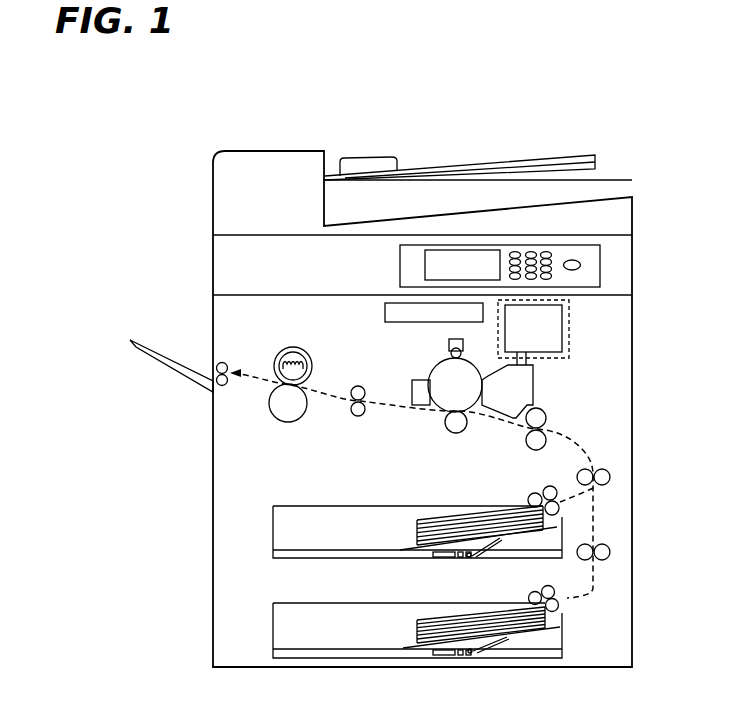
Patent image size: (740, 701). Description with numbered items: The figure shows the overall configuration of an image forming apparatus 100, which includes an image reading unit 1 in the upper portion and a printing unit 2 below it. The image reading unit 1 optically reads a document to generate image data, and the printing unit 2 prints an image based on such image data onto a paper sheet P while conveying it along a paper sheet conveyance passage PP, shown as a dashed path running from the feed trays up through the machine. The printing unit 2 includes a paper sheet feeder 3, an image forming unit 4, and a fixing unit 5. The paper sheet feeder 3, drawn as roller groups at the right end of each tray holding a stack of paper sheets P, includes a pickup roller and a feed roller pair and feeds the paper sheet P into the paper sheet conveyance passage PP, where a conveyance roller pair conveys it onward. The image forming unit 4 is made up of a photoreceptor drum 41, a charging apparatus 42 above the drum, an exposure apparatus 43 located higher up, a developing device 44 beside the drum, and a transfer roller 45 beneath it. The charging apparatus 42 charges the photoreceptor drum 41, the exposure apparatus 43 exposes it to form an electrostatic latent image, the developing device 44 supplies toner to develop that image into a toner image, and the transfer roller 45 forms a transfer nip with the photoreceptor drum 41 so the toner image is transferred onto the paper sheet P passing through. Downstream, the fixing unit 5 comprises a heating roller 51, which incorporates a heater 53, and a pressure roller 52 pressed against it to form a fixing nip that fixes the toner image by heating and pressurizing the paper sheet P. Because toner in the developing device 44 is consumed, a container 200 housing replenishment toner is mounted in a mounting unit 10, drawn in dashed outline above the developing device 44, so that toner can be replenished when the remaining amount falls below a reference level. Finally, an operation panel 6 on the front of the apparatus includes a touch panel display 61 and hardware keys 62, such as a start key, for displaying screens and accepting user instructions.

The image forming apparatus 100 is at (214, 145).
The image reading unit 1 is at (456, 259).
The printing unit 2 is at (642, 365).
The operation panel 6 is at (488, 249).
The touch panel display 61 is at (478, 256).
The hardware key 62 is at (573, 258).
The exposure apparatus 43 is at (385, 311).
The mounting unit 10 is at (562, 332).
The container 200 is at (558, 320).
The image forming unit 4 is at (483, 398).
The photoreceptor drum 41 is at (440, 368).
The charging apparatus 42 is at (449, 343).
The developing device 44 is at (531, 396).
The transfer roller 45 is at (452, 434).
The fixing unit 5 is at (274, 383).
The heating roller 51 is at (293, 350).
The pressure roller 52 is at (288, 422).
The heater 53 is at (280, 353).
The paper sheet conveyance passage PP is at (573, 439).
The paper sheet P is at (427, 520).
The paper sheet feeder 3 is at (518, 489).